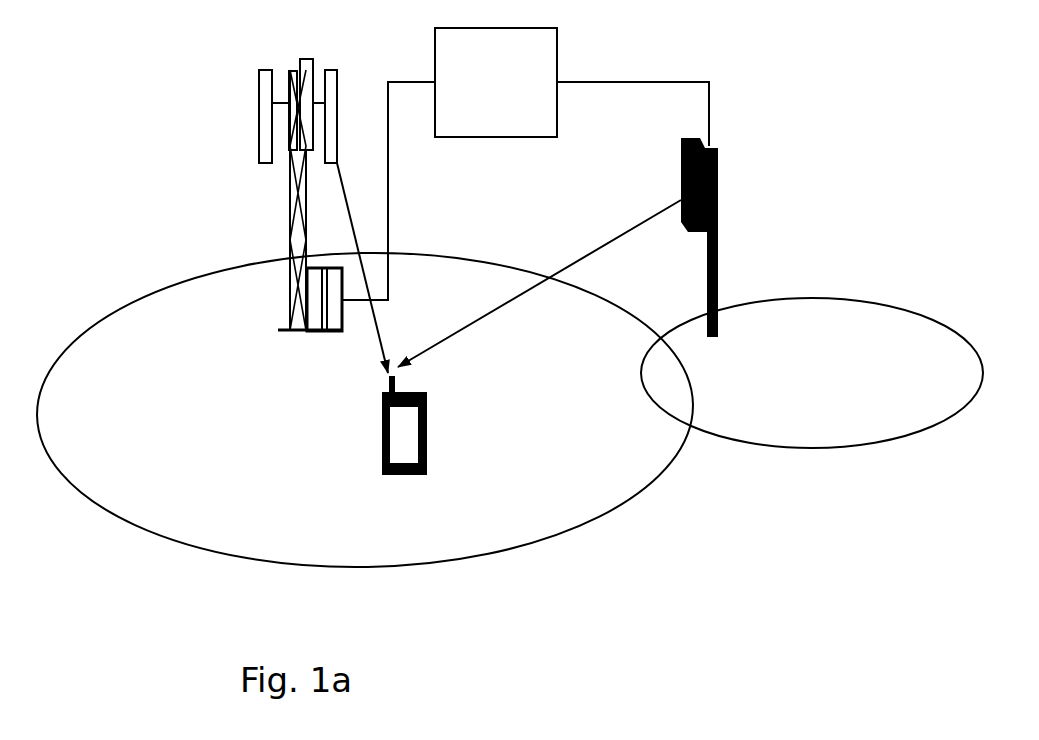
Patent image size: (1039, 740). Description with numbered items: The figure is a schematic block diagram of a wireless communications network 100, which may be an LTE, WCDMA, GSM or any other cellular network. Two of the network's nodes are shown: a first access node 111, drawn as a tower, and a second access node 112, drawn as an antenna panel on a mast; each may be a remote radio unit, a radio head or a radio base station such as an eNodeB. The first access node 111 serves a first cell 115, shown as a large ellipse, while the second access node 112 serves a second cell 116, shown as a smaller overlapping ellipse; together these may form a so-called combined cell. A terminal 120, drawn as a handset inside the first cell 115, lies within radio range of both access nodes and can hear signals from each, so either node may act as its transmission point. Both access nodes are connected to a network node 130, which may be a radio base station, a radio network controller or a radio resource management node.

The wireless communications network 100 is at (695, 515).
The first access node 111 is at (292, 288).
The second access node 112 is at (718, 242).
The first cell 115 is at (227, 552).
The second cell 116 is at (905, 308).
The terminal 120 is at (382, 435).
The network node 130 is at (496, 82).